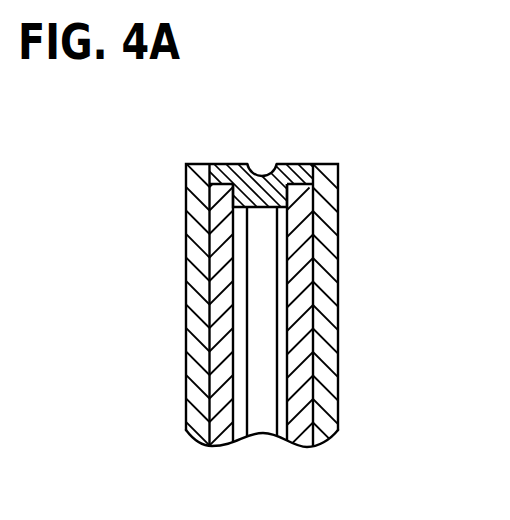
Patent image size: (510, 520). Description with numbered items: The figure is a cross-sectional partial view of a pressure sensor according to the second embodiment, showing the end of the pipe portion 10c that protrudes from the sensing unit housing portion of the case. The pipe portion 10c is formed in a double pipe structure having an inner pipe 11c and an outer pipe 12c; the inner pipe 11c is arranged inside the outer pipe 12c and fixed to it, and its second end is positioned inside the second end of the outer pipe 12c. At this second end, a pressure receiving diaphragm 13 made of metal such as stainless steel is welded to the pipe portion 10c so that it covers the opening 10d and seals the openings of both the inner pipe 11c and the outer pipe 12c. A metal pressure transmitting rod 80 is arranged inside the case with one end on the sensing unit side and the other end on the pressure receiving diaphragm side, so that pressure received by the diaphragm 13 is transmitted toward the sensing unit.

The pipe portion 10c is at (90, 227).
The inner pipe 11c is at (227, 253).
The outer pipe 12c is at (197, 289).
The opening 10d is at (292, 189).
The pressure receiving diaphragm 13 is at (285, 168).
The pressure transmitting rod 80 is at (260, 283).